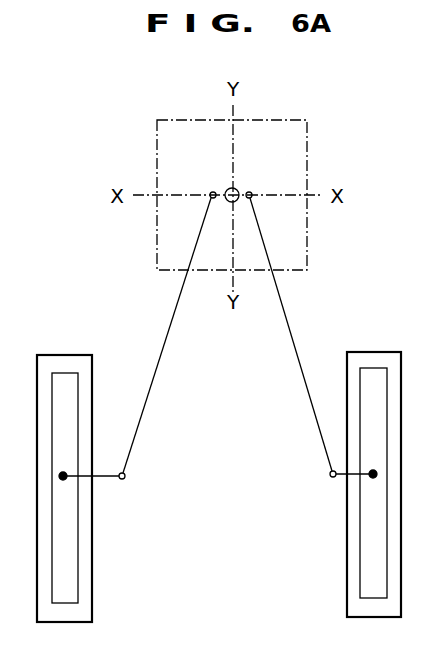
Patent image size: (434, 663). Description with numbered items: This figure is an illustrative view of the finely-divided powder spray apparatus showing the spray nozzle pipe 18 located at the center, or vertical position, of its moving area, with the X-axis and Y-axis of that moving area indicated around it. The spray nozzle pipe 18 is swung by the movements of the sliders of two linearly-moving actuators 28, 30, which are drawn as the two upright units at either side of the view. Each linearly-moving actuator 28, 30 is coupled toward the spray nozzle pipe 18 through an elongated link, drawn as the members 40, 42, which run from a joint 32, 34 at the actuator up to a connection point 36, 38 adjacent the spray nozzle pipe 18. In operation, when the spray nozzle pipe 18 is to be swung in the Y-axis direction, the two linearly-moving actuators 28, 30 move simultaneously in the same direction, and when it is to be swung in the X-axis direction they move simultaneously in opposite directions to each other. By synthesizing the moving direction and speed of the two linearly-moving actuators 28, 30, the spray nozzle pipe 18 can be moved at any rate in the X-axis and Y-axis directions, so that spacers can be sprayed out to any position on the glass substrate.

The spray nozzle pipe 18 is at (234, 188).
The linearly-moving actuator 28 is at (367, 502).
The linearly-moving actuator 30 is at (78, 497).
The right pivot joint 32 is at (330, 473).
The left pivot joint 34 is at (127, 473).
The right connection point 36 is at (251, 192).
The left connection point 38 is at (211, 192).
The right arm 40 is at (298, 365).
The left arm 42 is at (152, 388).